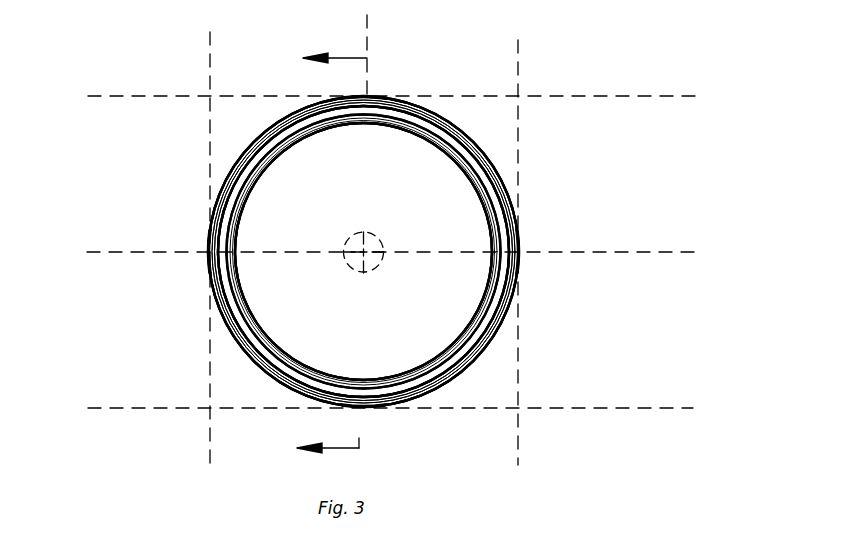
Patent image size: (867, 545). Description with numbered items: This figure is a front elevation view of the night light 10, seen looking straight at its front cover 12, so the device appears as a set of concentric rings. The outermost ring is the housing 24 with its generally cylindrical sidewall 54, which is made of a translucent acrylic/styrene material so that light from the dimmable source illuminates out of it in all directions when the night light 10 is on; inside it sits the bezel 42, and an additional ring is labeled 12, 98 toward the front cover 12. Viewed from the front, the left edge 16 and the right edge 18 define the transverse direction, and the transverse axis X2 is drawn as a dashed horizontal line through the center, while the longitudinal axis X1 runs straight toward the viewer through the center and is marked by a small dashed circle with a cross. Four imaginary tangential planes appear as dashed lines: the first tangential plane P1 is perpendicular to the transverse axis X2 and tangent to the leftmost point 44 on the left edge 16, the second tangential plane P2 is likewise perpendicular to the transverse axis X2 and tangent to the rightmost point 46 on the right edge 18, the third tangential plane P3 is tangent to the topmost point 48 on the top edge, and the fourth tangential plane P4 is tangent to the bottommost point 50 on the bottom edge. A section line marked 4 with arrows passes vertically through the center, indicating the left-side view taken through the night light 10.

The night light 10 is at (118, 82).
The front cover 12 is at (480, 275).
The inner ring 98 is at (433, 252).
The left edge 16 is at (222, 196).
The right edge 18 is at (518, 222).
The housing 24 is at (487, 140).
The generally cylindrical sidewall 54 is at (414, 231).
The bezel 42 is at (298, 330).
The leftmost point 44 is at (207, 250).
The rightmost point 46 is at (520, 252).
The topmost point 48 is at (367, 95).
The bottommost point 50 is at (360, 408).
The section line 4 is at (322, 237).
The longitudinal axis X1 is at (372, 244).
The transverse axis X2 is at (407, 255).
The imaginary first tangential plane P1 is at (190, 253).
The imaginary second tangential plane P2 is at (533, 253).
The imaginary third tangential plane P3 is at (408, 97).
The imaginary fourth tangential plane P4 is at (405, 409).